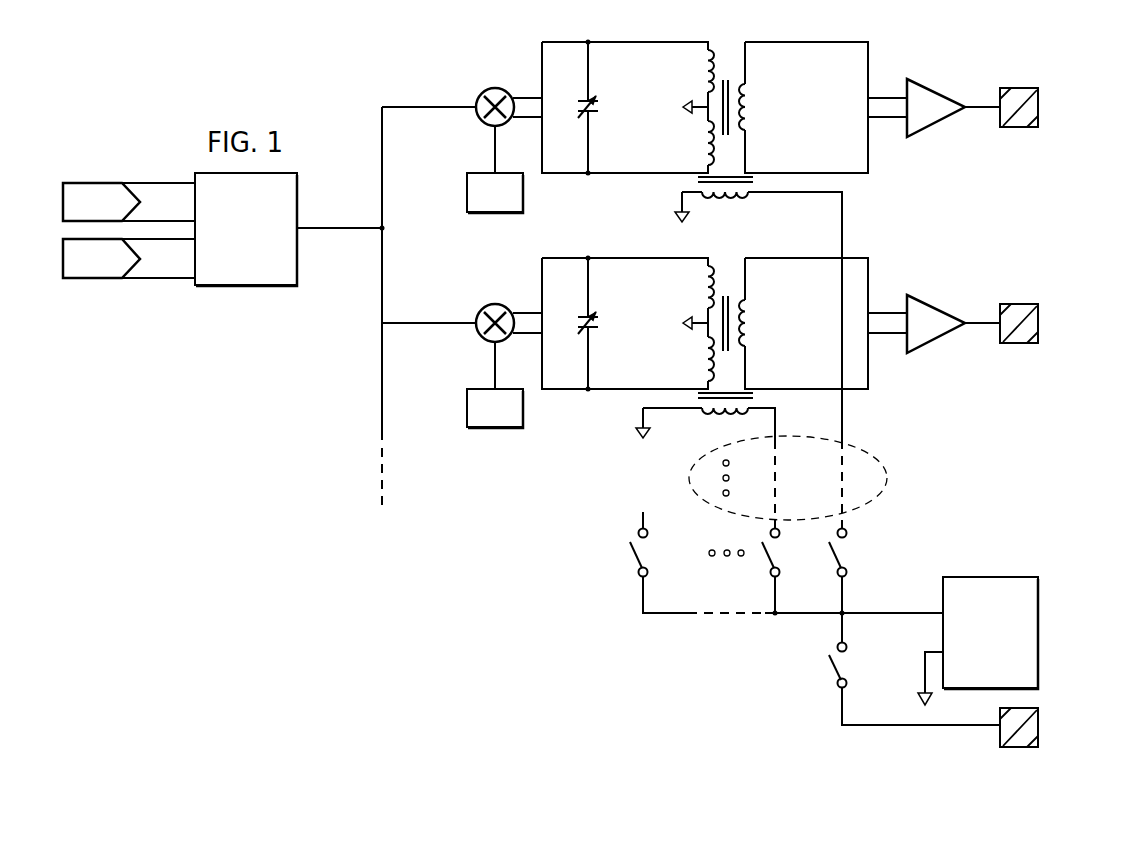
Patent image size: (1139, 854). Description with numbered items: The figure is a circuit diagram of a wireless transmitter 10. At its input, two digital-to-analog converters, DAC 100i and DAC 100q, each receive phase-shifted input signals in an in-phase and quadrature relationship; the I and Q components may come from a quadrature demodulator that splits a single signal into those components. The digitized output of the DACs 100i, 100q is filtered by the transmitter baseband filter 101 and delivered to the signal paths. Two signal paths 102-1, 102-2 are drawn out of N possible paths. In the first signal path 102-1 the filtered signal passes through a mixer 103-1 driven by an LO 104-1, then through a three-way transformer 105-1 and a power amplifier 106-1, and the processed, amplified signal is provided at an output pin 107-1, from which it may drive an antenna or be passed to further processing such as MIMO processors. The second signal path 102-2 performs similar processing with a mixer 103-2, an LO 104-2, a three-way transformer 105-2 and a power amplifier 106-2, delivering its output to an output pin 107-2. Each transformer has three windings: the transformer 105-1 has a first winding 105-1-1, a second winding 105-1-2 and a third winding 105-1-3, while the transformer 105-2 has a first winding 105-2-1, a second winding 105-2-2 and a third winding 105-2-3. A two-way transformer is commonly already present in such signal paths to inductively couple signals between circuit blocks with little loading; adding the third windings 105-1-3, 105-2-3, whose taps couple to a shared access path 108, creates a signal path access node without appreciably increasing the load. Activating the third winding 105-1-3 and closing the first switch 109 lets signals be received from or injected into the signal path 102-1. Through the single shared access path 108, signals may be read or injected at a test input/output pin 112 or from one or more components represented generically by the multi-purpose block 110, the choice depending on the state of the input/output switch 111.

The wireless transmitter 10 is at (243, 80).
The DAC 100i is at (92, 182).
The DAC 100q is at (92, 278).
The transmitter baseband filter 101 is at (247, 286).
The signal path 102-1 is at (373, 98).
The signal path 102-2 is at (373, 361).
The mixer 103-1 is at (482, 92).
The mixer 103-2 is at (482, 308).
The LO 104-1 is at (467, 192).
The LO 104-2 is at (467, 408).
The three-way transformer 105-1 is at (724, 272).
The first winding 105-1-1 is at (695, 138).
The second winding 105-1-2 is at (760, 98).
The third winding 105-1-3 is at (760, 183).
The three-way transformer 105-2 is at (720, 381).
The first winding 105-2-1 is at (695, 358).
The second winding 105-2-2 is at (760, 313).
The third winding 105-2-3 is at (758, 403).
The power amplifier 106-1 is at (957, 80).
The power amplifier 106-2 is at (957, 296).
The output pin 107-1 is at (1040, 96).
The output pin 107-2 is at (1040, 312).
The shared access path 108 is at (885, 487).
The switch SW1 109 is at (833, 562).
The multi-purpose block 110 is at (992, 577).
The switch SW I/O 111 is at (829, 662).
The test input/output (I/O) pin 112 is at (1018, 748).